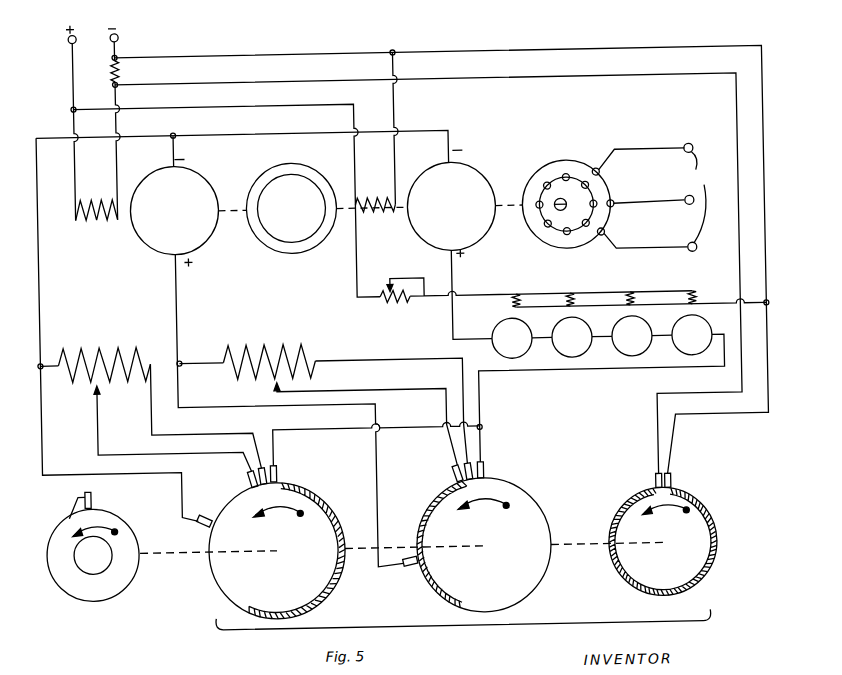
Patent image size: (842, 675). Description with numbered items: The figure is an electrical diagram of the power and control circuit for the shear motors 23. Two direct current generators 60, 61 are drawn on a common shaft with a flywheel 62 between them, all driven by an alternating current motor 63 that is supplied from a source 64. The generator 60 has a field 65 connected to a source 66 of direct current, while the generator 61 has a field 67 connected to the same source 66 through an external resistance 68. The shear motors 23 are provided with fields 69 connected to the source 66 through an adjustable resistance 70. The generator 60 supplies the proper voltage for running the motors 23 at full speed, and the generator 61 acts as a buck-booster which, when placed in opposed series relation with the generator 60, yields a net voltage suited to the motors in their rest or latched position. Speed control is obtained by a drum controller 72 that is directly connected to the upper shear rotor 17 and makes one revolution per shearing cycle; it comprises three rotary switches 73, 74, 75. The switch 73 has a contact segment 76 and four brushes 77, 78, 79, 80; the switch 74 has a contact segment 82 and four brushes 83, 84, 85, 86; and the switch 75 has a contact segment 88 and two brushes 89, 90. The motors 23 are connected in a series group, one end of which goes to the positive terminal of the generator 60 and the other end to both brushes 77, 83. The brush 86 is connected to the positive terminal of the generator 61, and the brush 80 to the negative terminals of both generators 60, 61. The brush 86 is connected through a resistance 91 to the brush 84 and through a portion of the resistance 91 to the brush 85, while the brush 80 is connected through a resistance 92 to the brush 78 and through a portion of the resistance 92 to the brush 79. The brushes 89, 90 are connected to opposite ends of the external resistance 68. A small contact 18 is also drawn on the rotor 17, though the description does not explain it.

The source of direct current 66 is at (93, 29).
The external resistance 68 is at (126, 71).
The field 67 is at (96, 201).
The direct current generator 61 is at (138, 224).
The flywheel 62 is at (265, 172).
The field 65 is at (375, 215).
The direct current generator 60 is at (488, 236).
The alternating current motor 63 is at (575, 164).
The source 64 is at (697, 201).
The adjustable resistance 70 is at (395, 303).
The fields 69 is at (650, 304).
The shear motors 23 is at (529, 354).
The resistance 91 is at (269, 352).
The resistance 92 is at (104, 354).
The rotary switch 73 is at (277, 550).
The contact segment 76 is at (319, 501).
The brush 77 is at (276, 469).
The brush 78 is at (261, 481).
The brush 79 is at (245, 478).
The brush 80 is at (196, 522).
The rotary switch 74 is at (484, 545).
The contact segment 82 is at (421, 512).
The brush 83 is at (483, 469).
The brush 84 is at (468, 481).
The brush 85 is at (449, 472).
The brush 86 is at (405, 566).
The rotary switch 75 is at (663, 541).
The contact segment 88 is at (714, 549).
The brush 89 is at (671, 485).
The brush 90 is at (653, 484).
The upper shear rotor 17 is at (92, 590).
The contact finger 18 is at (92, 494).
The drum controller 72 is at (463, 631).